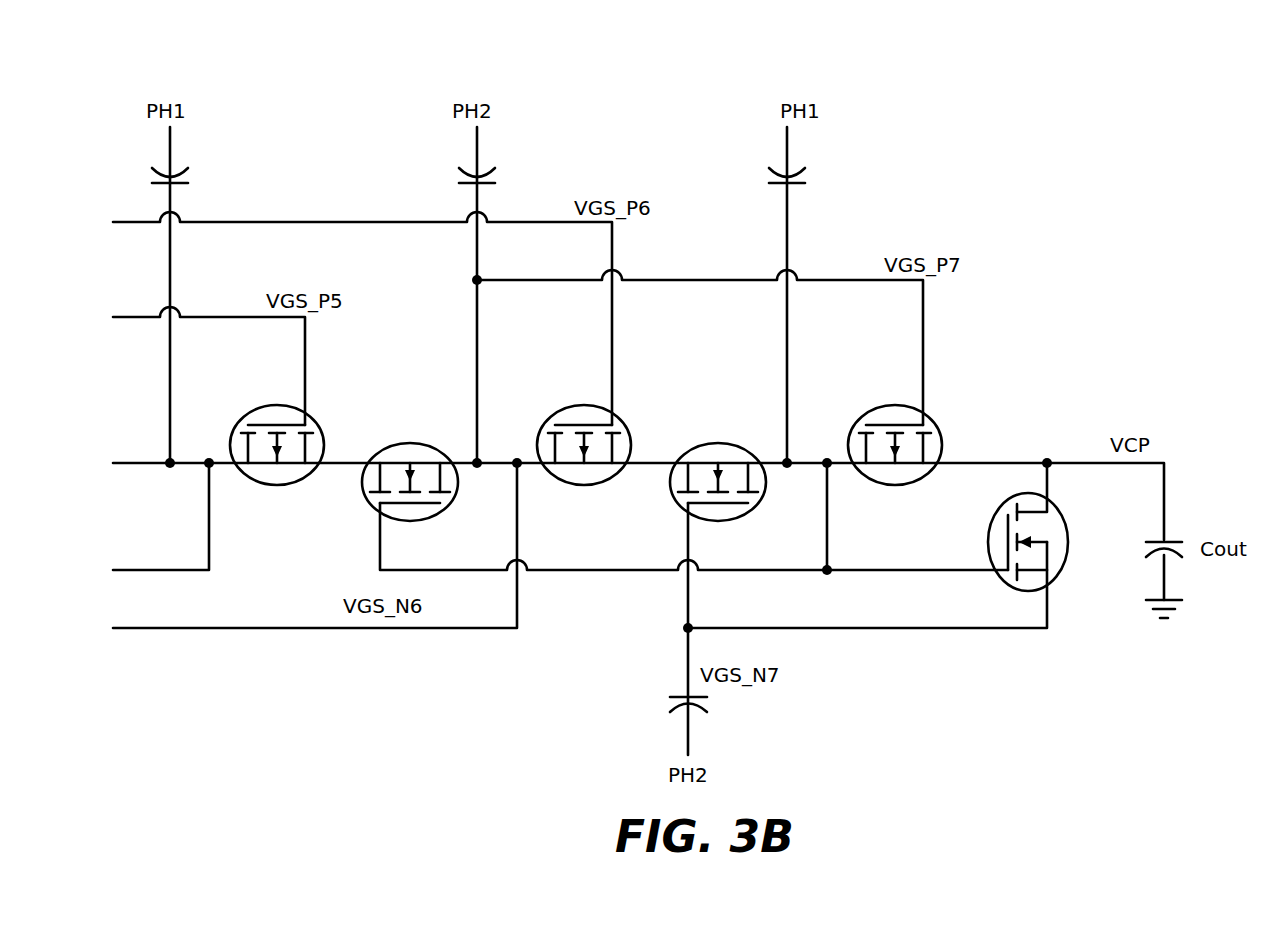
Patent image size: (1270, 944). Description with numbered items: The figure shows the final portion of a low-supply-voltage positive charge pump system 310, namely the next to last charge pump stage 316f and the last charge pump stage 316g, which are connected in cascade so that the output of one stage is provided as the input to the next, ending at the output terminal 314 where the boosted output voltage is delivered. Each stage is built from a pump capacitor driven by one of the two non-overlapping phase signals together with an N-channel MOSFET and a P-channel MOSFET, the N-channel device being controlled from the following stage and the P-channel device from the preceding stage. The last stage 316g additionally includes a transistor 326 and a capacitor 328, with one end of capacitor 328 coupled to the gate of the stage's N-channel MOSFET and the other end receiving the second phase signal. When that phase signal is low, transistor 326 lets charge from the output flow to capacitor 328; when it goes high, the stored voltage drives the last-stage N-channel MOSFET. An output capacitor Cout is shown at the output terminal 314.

The charge pump system 310 is at (1003, 130).
The output terminal 314 is at (1172, 452).
The next to last charge pump stage 316f is at (368, 172).
The last charge pump stage 316g is at (690, 175).
The transistor 326 is at (990, 530).
The capacitor 328 is at (707, 697).
The output capacitor Cout is at (1164, 580).